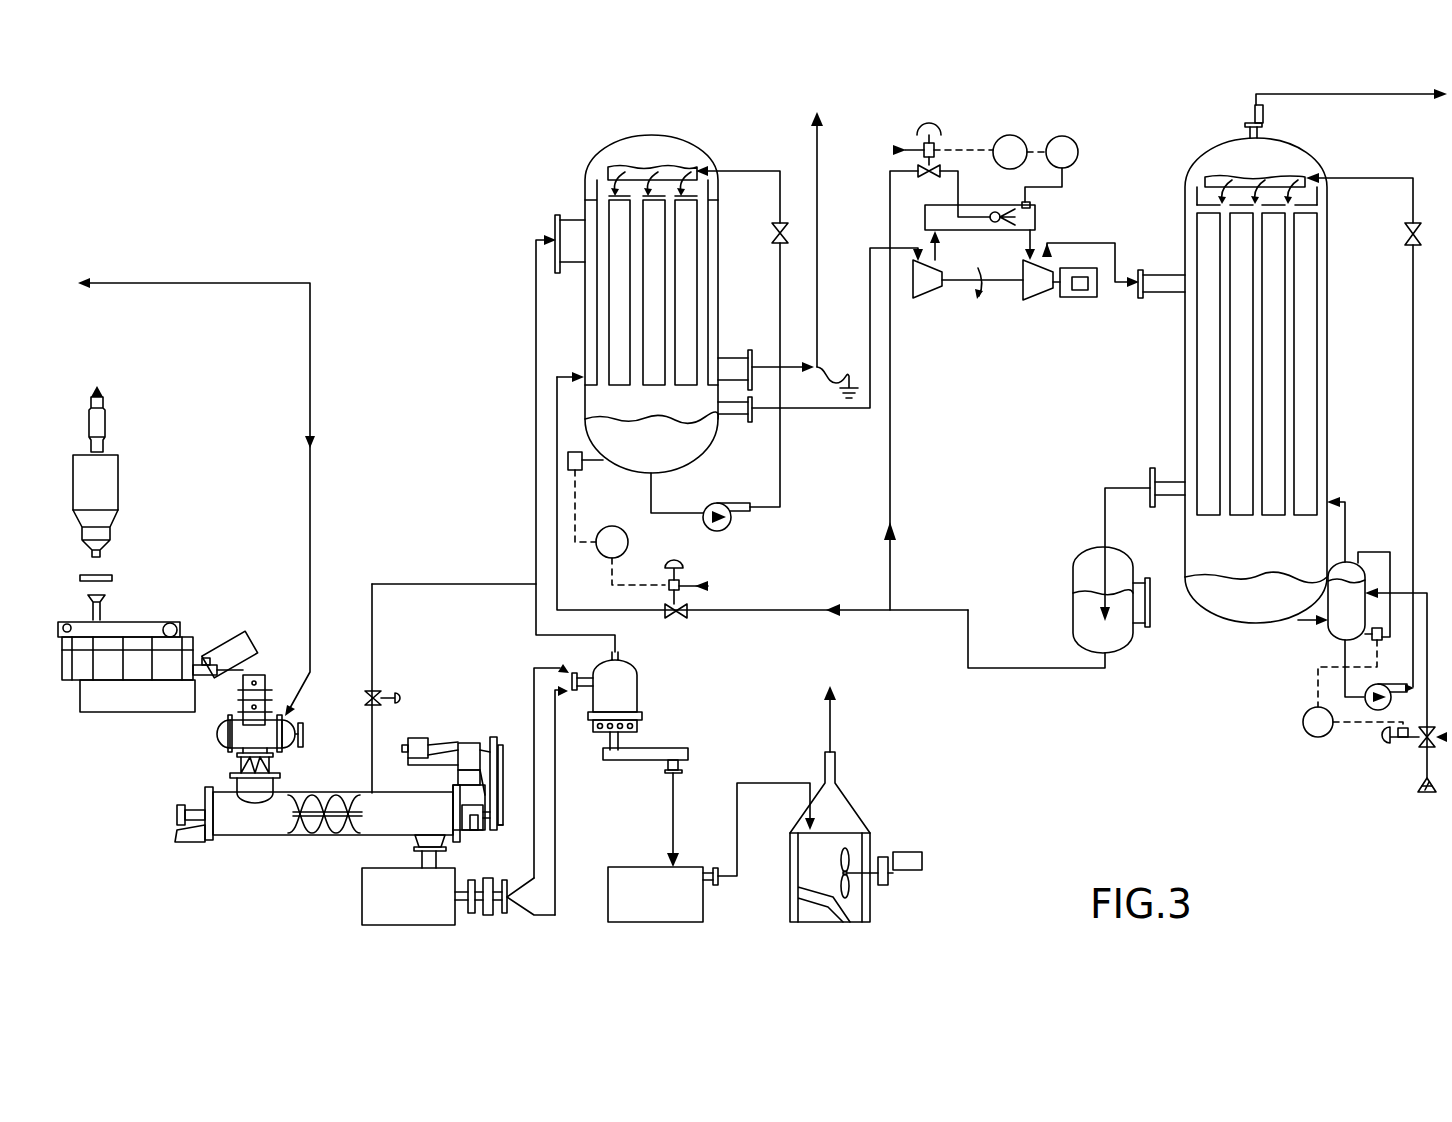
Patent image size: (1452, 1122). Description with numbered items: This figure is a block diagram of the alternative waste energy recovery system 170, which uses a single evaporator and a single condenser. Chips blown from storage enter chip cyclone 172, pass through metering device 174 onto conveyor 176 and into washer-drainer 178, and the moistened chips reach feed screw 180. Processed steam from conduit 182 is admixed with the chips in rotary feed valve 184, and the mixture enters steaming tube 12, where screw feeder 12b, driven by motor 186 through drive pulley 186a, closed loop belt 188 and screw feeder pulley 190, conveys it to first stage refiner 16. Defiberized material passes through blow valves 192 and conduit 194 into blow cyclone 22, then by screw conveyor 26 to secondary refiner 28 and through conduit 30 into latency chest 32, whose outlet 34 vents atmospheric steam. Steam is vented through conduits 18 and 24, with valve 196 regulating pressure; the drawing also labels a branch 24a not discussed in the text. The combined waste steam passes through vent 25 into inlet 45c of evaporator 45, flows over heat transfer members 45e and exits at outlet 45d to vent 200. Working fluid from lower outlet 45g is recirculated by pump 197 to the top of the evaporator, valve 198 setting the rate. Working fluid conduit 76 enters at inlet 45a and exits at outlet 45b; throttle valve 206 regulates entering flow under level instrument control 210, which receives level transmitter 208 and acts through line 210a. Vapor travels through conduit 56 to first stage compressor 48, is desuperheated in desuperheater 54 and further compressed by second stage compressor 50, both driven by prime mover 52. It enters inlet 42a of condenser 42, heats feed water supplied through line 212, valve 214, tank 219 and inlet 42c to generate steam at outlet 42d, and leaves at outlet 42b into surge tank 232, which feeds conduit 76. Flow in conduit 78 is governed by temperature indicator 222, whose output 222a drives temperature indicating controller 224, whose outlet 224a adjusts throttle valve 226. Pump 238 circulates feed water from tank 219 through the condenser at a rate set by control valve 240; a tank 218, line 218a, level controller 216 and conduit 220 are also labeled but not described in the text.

The steaming tube 12 is at (320, 835).
The screw feeder 12b is at (335, 797).
The first stage refiner 16 is at (384, 866).
The conduit 18 is at (371, 727).
The blow cyclone 22 is at (640, 700).
The conduit 24 is at (583, 640).
The gas line branch 24a is at (533, 588).
The vent 25 is at (535, 283).
The screw conveyor 26 is at (660, 748).
The secondary non-pressurized refiner stage 28 is at (642, 855).
The conduit 30 is at (730, 800).
The latency chest 32 is at (858, 815).
The outlet 34 is at (829, 718).
The condenser 42 is at (1176, 354).
The inlet 42a is at (1128, 272).
The outlet 42b is at (1128, 482).
The inlet 42c is at (1345, 498).
The outlet 42d is at (1254, 113).
The evaporator 45 is at (580, 140).
The inlet 45a is at (570, 376).
The outlet opening 45b is at (795, 408).
The inlet 45c is at (545, 235).
The outlet 45d is at (758, 358).
The heat transfer members 45e is at (658, 300).
The outlet 45g is at (652, 486).
The first stage compressor 48 is at (925, 296).
The second stage compressor 50 is at (1040, 296).
The common prime mover 52 is at (1075, 297).
The desuperheater 54 is at (975, 231).
The conduit 56 is at (869, 308).
The working fluid conduit 76 is at (571, 612).
The conduit 78 is at (891, 455).
The waste recovery system 170 is at (240, 933).
The chip cyclone 172 is at (119, 475).
The metering device 174 is at (107, 573).
The conveyor 176 is at (115, 622).
The washer-drainer 178 is at (185, 645).
The feed screw 180 is at (238, 702).
The conduit 182 is at (162, 285).
The rotary feed valve 184 is at (217, 738).
The motor 186 is at (410, 737).
The drive pulley 186a is at (499, 745).
The closed loop belt 188 is at (500, 790).
The screw feeder pulley 190 is at (502, 822).
The blow valves 192 is at (486, 878).
The conduit 194 is at (532, 684).
The valve 196 is at (364, 697).
The pump 197 is at (729, 527).
The valve 198 is at (772, 233).
The vent 200 is at (814, 140).
The throttle valve 206 is at (684, 618).
The level transmitter 208 is at (582, 470).
The level instrument control 210 is at (598, 552).
The line 210a is at (657, 574).
The line 212 is at (1425, 778).
The valve 214 is at (1422, 745).
The level indicator controller 216 is at (1310, 733).
The separator drum 218 is at (1377, 628).
The signal line 218a is at (1330, 667).
The tank 219 is at (1328, 634).
The return line 220 is at (1347, 525).
The temperature indicator 222 is at (1079, 147).
The output 222a is at (1042, 148).
The temperature indicating controller 224 is at (1020, 138).
The outlet 224a is at (978, 147).
The throttle valve 226 is at (927, 122).
The working fluid surge tank 232 is at (1072, 637).
The pump 238 is at (1380, 684).
The control valve 240 is at (1405, 236).